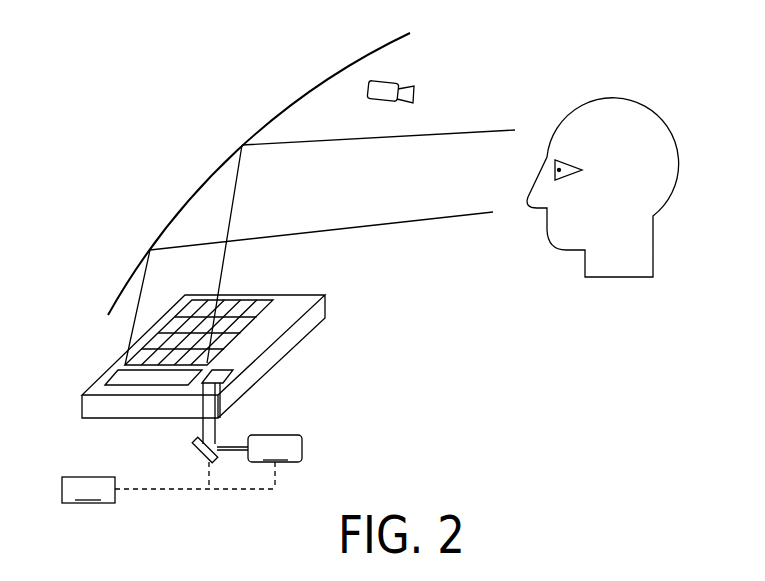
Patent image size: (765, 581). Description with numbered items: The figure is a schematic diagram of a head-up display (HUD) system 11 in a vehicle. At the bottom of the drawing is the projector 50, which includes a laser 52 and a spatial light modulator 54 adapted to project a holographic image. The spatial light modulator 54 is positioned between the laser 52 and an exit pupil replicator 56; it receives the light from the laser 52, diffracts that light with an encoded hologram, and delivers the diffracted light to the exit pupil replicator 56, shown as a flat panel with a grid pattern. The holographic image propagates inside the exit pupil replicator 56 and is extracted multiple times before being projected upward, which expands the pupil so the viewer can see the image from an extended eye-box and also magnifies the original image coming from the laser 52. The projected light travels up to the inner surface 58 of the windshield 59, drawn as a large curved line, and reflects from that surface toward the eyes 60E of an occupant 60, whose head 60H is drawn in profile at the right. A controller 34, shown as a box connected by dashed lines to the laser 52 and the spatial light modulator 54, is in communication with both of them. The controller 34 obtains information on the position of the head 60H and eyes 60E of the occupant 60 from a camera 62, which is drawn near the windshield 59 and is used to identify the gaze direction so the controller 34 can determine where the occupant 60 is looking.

The head-up display system 11 is at (488, 340).
The controller 34 is at (88, 490).
The projector 50 is at (248, 424).
The laser 52 is at (277, 434).
The spatial light modulator 54 is at (197, 452).
The exit pupil replicator 56 is at (317, 313).
The inner surface of the windshield 58 is at (302, 98).
The windshield 59 is at (260, 130).
The occupant 60 is at (597, 186).
The eyes 60E is at (558, 168).
The head 60H is at (663, 118).
The camera 62 is at (387, 80).